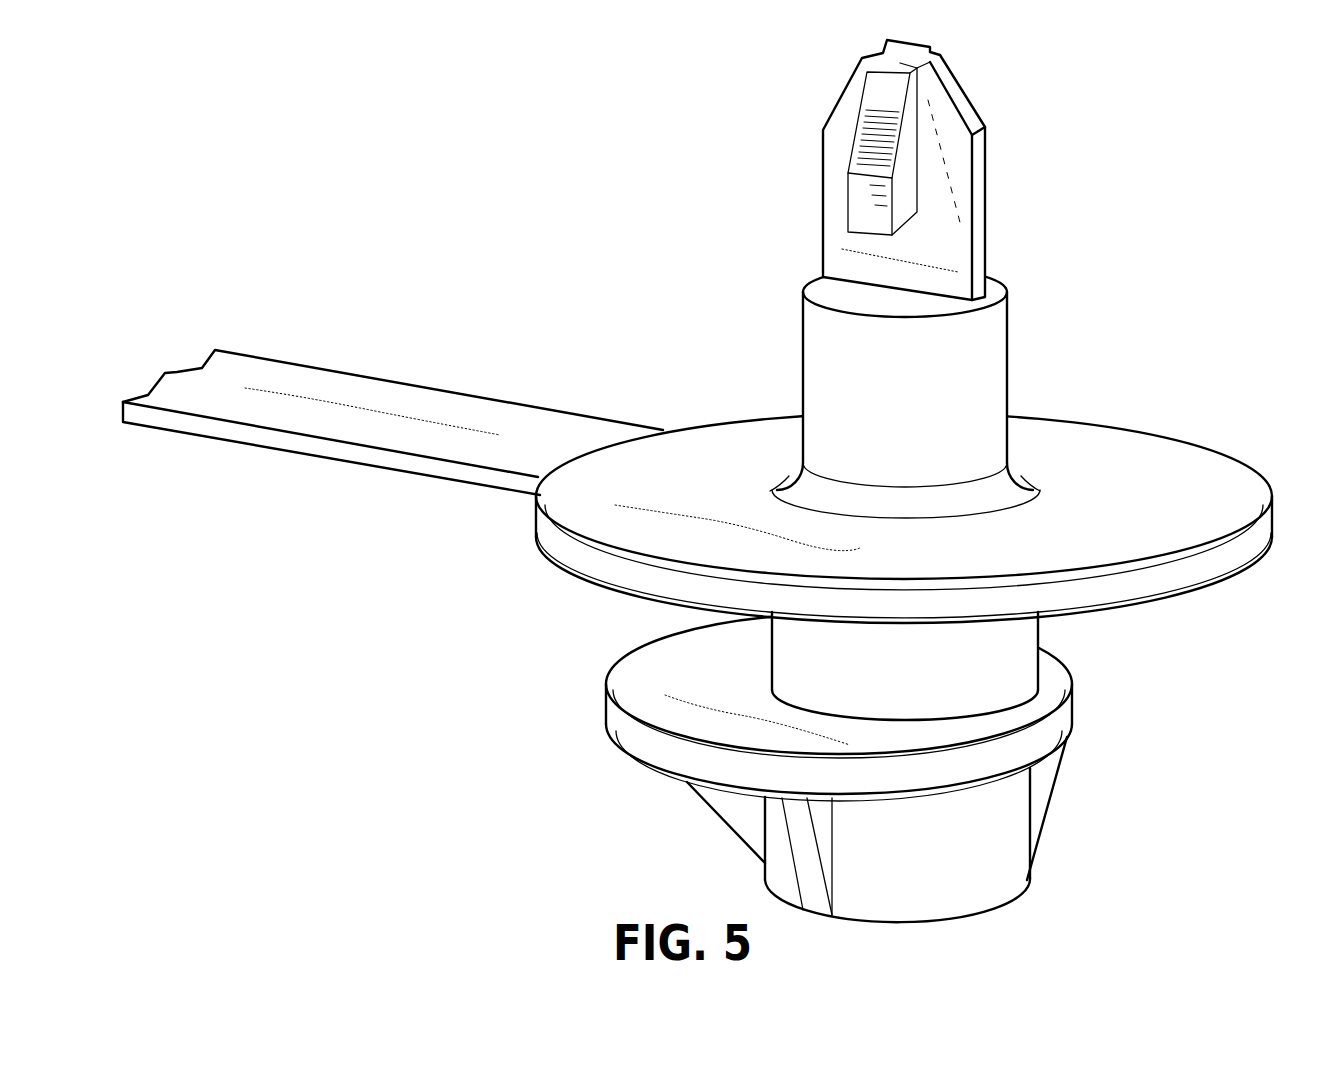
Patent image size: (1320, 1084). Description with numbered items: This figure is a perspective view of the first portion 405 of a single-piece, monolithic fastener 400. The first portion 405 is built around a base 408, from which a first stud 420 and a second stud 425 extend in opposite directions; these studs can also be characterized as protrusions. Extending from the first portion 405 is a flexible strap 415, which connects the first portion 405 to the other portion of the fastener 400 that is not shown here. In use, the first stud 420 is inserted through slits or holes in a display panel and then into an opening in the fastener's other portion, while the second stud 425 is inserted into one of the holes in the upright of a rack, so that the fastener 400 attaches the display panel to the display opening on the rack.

The fastener 400 is at (701, 481).
The first portion 405 is at (908, 445).
The base 408 is at (1133, 504).
The flexible strap 415 is at (397, 392).
The first stud 420 is at (1018, 198).
The second stud 425 is at (617, 743).